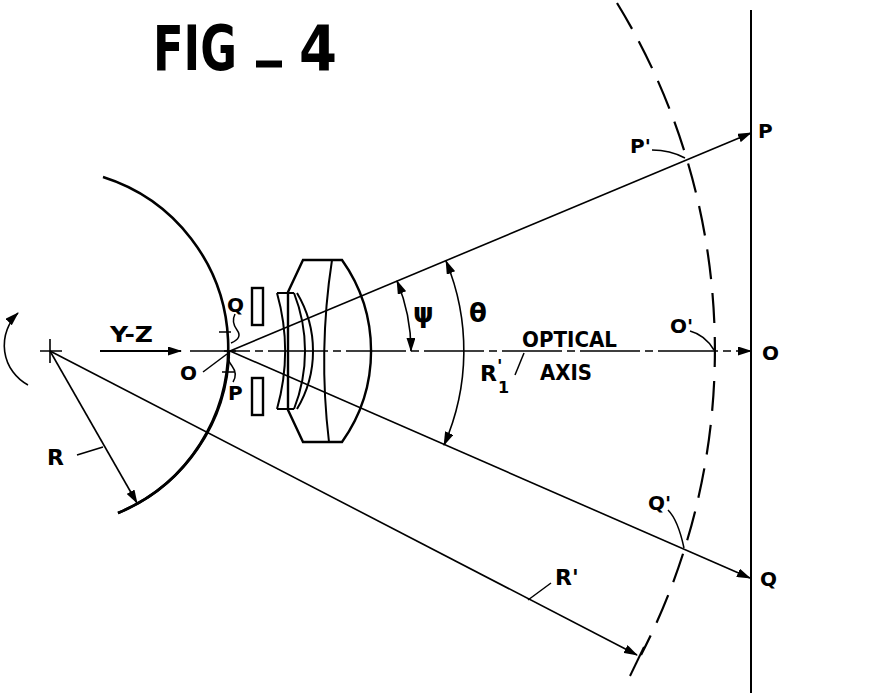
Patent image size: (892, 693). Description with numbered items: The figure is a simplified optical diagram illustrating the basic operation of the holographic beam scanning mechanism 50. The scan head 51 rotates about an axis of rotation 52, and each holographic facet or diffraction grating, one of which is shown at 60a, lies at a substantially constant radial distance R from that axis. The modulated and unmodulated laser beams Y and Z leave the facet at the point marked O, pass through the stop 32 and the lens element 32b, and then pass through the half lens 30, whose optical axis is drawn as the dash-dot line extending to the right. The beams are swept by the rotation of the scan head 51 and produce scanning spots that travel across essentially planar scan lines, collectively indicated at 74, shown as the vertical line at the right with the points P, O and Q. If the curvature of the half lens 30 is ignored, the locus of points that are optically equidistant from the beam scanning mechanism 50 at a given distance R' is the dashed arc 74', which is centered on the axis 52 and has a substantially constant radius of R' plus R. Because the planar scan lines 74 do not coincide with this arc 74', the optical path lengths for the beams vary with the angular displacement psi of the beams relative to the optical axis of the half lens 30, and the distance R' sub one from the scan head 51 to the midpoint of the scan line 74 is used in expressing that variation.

The half lens 30 is at (329, 257).
The aperture stop 32 is at (256, 288).
The lens element 32b is at (268, 322).
The beam scanning mechanism 50 is at (192, 481).
The scan head 51 is at (157, 206).
The axis of rotation 52 is at (50, 348).
The holographic facet 60a is at (213, 336).
The scan lines 74 is at (786, 351).
The arc of optically equidistant points 74' is at (646, 329).